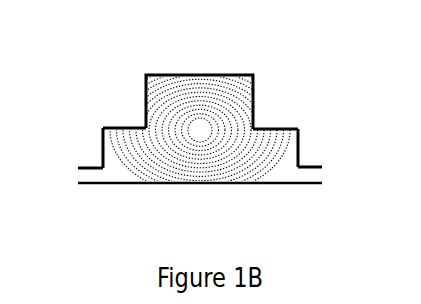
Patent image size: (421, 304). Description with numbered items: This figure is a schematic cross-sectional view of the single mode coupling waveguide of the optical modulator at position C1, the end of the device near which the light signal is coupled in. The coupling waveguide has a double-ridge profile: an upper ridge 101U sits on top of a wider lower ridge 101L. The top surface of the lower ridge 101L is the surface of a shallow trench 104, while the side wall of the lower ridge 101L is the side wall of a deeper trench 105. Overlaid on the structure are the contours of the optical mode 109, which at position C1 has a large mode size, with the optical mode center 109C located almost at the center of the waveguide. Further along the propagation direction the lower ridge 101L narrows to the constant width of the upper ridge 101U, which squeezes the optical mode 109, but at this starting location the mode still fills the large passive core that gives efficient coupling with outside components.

The position C1 is at (206, 110).
The upper ridge 101U is at (153, 78).
The lower ridge 101L is at (289, 150).
The shallow trench 104 is at (113, 127).
The deeper trench 105 is at (98, 167).
The optical mode 109 is at (240, 84).
The optical mode center 109C is at (203, 130).